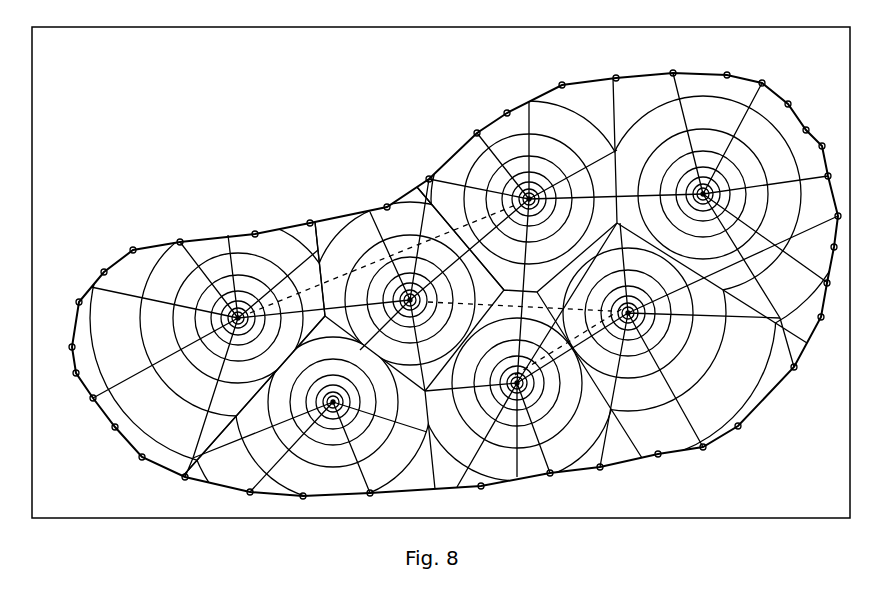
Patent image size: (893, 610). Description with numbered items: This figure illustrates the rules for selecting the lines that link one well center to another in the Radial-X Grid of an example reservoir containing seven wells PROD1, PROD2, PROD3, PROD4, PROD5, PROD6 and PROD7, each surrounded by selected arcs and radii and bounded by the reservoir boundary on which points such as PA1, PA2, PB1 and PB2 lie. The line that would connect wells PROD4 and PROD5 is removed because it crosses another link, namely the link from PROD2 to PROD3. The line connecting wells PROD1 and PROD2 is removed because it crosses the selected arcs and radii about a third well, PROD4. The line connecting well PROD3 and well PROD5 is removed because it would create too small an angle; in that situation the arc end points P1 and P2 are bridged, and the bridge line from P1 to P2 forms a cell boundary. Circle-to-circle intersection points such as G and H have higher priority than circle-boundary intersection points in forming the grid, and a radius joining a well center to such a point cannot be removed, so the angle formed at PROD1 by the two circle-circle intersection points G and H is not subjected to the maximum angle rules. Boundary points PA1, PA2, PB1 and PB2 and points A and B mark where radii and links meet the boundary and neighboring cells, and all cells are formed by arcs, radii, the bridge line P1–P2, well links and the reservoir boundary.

The well PROD1 is at (250, 318).
The well PROD2 is at (542, 217).
The well PROD3 is at (517, 377).
The well PROD4 is at (410, 300).
The well PROD5 is at (659, 316).
The well PROD6 is at (703, 194).
The well PROD7 is at (333, 402).
The boundary point A1 PA1 is at (77, 407).
The boundary point A2 PA2 is at (235, 227).
The boundary point B1 PB1 is at (420, 167).
The boundary point B2 PB2 is at (509, 101).
The grid segment A is at (314, 269).
The grid segment B is at (460, 238).
The circle-circle intersection point G is at (218, 436).
The circle-circle intersection point H is at (272, 374).
The arc end point P1 is at (570, 341).
The arc end point P2 is at (572, 348).